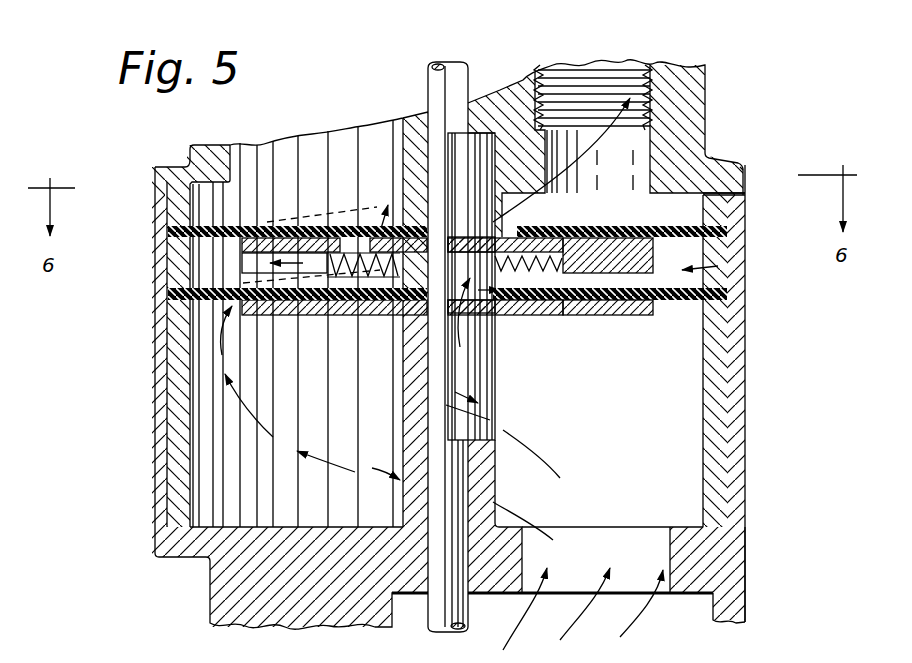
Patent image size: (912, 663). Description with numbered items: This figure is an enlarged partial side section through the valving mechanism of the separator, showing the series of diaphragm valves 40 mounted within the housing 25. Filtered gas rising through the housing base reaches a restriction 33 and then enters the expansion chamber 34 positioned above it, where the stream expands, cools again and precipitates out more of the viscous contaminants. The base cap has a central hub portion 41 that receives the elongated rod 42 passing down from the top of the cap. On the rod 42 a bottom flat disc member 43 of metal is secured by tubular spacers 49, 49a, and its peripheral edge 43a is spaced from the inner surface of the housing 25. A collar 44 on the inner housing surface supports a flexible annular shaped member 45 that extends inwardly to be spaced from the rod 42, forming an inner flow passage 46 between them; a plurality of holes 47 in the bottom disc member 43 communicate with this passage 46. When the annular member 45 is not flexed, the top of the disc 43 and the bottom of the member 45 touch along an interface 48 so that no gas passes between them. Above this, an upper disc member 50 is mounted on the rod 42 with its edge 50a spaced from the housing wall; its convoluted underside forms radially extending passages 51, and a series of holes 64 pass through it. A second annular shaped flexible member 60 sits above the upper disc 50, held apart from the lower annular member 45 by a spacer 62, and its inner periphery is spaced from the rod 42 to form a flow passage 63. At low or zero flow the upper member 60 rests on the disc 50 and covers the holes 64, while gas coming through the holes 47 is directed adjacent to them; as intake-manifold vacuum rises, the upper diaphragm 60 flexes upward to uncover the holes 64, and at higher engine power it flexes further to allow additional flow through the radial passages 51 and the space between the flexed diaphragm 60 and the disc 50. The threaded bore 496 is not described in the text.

The housing 25 is at (740, 497).
The restriction 33 is at (663, 547).
The expansion chamber 34 is at (682, 432).
The diaphragm valves 40 is at (712, 268).
The central hub portion 41 is at (482, 545).
The elongated rod 42 is at (430, 76).
The bottom flat disc member 43 is at (563, 314).
The peripheral edge 43a is at (650, 318).
The collar 44 is at (703, 370).
The flexible annular shaped member 45 is at (680, 302).
The inner flow passage 46 is at (462, 345).
The holes 47 is at (517, 312).
The interface 48 is at (588, 312).
The tubular spacer 49 is at (470, 420).
The tubular spacer 49a is at (477, 360).
The upper disc member 50 is at (250, 254).
The edge 50a is at (680, 226).
The radially extending passages 51 is at (340, 298).
The second annular shaped flexible member 60 is at (222, 196).
The spacer 62 is at (722, 250).
The flow passage 63 is at (398, 235).
The holes 64 is at (548, 224).
The threaded bore 496 is at (474, 150).